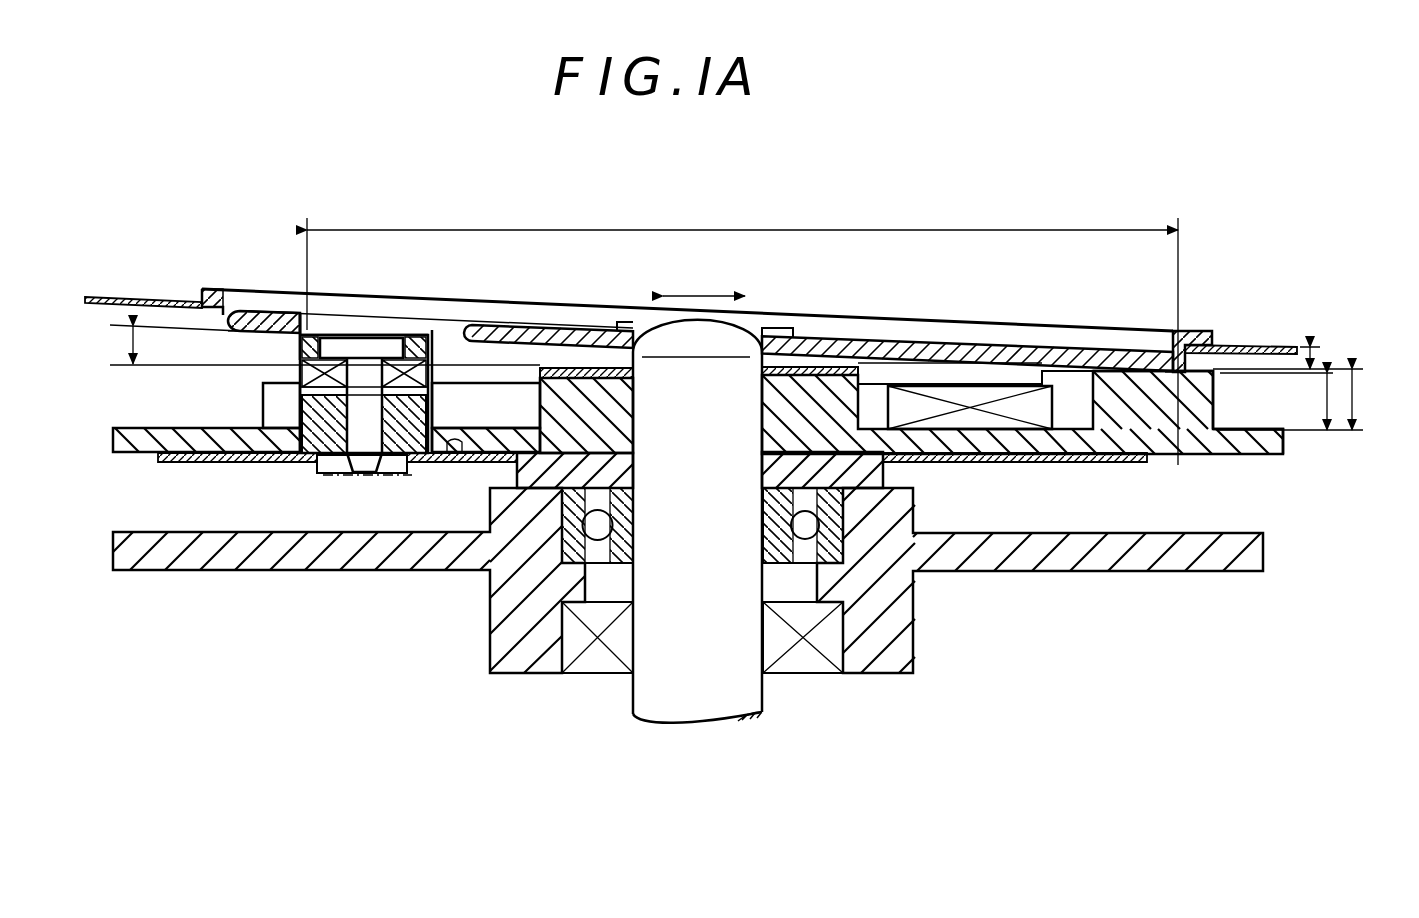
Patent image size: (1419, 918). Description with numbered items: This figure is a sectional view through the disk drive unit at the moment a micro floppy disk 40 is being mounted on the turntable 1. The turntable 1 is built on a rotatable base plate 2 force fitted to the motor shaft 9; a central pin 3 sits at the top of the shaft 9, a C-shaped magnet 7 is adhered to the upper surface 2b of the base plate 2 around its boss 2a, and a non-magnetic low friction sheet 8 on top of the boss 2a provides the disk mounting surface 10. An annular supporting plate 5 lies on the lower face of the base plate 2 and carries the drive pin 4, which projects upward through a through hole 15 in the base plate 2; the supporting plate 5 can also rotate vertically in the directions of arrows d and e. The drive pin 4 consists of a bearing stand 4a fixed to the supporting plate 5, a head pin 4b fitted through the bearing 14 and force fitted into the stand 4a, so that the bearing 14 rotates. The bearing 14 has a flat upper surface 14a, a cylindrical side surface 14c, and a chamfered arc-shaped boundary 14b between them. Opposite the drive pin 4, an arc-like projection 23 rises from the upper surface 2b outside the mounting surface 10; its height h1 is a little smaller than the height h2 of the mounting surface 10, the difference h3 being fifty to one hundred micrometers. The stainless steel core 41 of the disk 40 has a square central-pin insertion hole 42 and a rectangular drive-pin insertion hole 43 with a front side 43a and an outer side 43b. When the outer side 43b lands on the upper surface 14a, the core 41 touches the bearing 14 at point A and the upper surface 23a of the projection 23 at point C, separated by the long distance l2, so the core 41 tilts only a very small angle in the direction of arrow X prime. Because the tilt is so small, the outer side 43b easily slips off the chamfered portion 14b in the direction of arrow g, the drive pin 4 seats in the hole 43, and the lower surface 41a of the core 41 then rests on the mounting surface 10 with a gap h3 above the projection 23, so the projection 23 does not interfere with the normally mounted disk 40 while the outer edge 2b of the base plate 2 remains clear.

The turntable 1 is at (1290, 461).
The rotatable base plate 2 is at (1241, 456).
The boss 2a is at (570, 390).
The upper surface of the base plate 2b is at (1272, 458).
The central pin 3 is at (744, 343).
The drive pin 4 is at (352, 338).
The bearing stand 4a is at (390, 452).
The head pin 4b is at (396, 336).
The supporting plate 5 is at (207, 463).
The magnet 7 is at (935, 424).
The low friction sheet 8 is at (815, 368).
The motor shaft 9 is at (640, 695).
The disk mounting surface 10 is at (850, 360).
The bearing 14 is at (265, 384).
The upper surface of the drive pin 14a is at (413, 333).
The chamfered boundary 14b is at (302, 343).
The cylindrical side surface 14c is at (434, 354).
The through hole 15 is at (453, 448).
The arc-like projection 23 is at (1210, 413).
The upper surface of the projection 23a is at (1197, 373).
The micro floppy disk 40 is at (178, 298).
The core 41 is at (1190, 337).
The lower surface of the core 41a is at (880, 362).
The central-pin insertion hole 42 is at (627, 323).
The drive-pin insertion hole 43 is at (472, 330).
The front side of the insertion hole 43a is at (372, 330).
The outer side of the insertion hole 43b is at (310, 308).
The point A is at (308, 328).
The point C is at (1170, 370).
The arrow d is at (445, 345).
The arrow e is at (445, 424).
The arrow g is at (243, 347).
The height of the projection h1 is at (1322, 406).
The height of the disk mounting surface h2 is at (1356, 402).
The height difference / gap h3 is at (1312, 369).
The distance between points A and C l2 is at (742, 324).